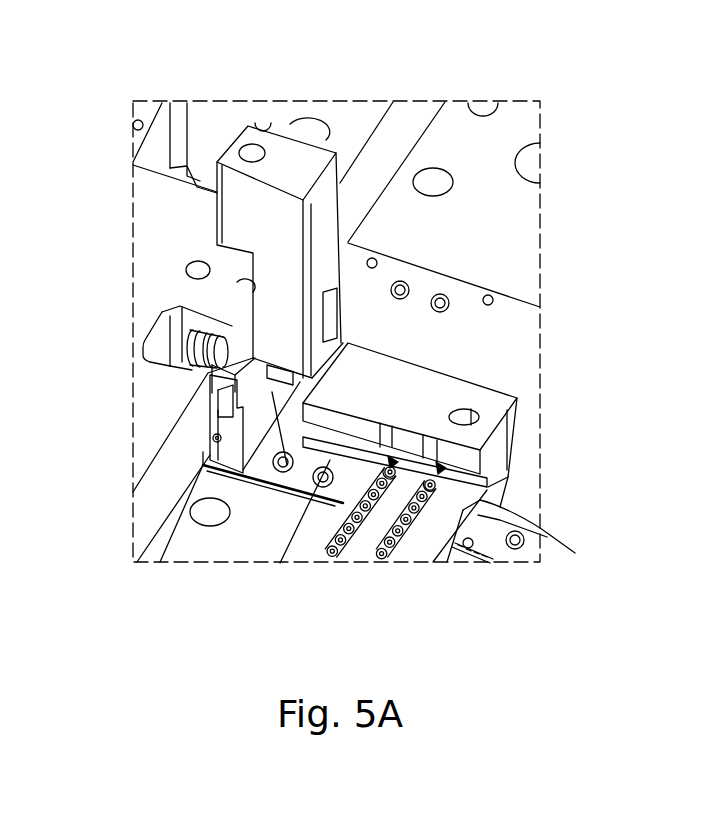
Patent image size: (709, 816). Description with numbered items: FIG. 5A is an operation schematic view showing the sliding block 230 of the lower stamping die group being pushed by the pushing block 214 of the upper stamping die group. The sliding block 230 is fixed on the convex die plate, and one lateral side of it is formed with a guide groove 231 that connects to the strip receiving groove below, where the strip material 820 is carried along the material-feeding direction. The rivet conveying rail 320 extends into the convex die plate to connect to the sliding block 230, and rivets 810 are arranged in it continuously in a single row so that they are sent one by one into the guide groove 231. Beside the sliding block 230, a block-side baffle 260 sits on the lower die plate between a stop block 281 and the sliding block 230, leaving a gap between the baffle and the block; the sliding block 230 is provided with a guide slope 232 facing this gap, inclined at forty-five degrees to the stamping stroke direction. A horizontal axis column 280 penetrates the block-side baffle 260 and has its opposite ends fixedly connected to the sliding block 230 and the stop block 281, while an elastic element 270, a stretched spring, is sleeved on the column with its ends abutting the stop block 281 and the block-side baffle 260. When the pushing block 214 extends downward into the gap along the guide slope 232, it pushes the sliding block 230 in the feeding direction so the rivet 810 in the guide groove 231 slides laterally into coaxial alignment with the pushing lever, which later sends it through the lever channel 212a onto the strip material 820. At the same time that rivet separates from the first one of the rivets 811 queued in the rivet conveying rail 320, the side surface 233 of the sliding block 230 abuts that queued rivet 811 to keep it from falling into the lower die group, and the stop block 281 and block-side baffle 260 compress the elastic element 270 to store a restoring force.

The pushing block 214 is at (282, 143).
The block-side baffle 260 is at (254, 340).
The elastic element 270 is at (165, 306).
The stop block 281 is at (185, 314).
The guide slope 232 is at (323, 373).
The horizontal axis column 280 is at (288, 382).
The sliding block 230 is at (410, 373).
The lever channel 212a is at (378, 446).
The guide groove 231 is at (398, 461).
The side surface 233 is at (314, 450).
The rivet conveying rail 320 is at (353, 560).
The first one of the rivets queued in the rivet conveying rail 811 is at (385, 475).
The rivet 810 is at (562, 542).
The strip material 820 is at (528, 477).